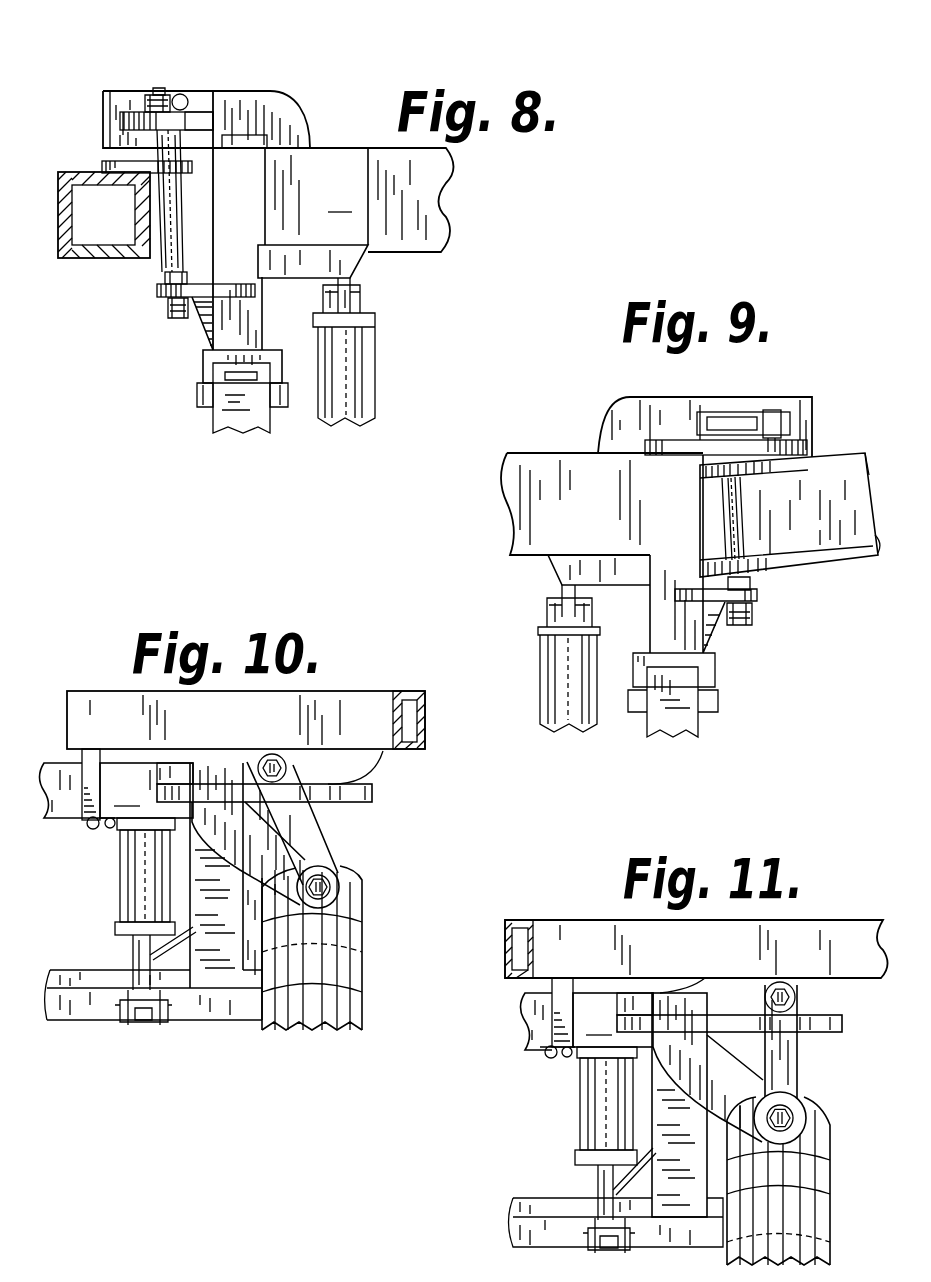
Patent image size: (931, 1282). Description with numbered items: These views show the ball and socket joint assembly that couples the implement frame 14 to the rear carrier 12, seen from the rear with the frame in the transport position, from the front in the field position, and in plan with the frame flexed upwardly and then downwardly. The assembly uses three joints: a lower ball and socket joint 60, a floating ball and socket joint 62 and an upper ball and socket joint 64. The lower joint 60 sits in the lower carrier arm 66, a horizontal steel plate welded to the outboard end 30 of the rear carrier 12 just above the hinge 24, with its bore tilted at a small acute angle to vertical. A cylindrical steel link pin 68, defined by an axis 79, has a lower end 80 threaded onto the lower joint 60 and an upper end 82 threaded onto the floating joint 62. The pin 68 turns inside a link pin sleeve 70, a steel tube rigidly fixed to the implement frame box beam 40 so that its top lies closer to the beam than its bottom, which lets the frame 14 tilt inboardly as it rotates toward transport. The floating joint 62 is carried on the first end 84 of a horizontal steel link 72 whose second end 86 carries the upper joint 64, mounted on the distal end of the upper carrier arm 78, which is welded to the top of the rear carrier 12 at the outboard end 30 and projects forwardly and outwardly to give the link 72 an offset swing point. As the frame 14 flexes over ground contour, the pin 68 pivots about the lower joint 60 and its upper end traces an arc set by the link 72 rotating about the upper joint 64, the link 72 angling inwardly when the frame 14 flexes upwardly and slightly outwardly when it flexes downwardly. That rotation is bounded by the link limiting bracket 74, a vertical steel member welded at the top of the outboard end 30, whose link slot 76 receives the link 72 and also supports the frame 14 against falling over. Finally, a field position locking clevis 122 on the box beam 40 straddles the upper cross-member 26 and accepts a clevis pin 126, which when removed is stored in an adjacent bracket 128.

In FIG. 8, the rear carrier 12 is at (333, 213).
In FIG. 9, the rear carrier 12 is at (602, 592).
In FIG. 10, the implement frame 14 is at (360, 691).
In FIG. 11, the implement frame 14 is at (565, 920).
In FIG. 8, the hinge 24 is at (205, 375).
In FIG. 10, the upper cross-member 26 is at (146, 790).
In FIG. 11, the upper cross-member 26 is at (613, 1020).
In FIG. 8, the outboard end 30 is at (205, 338).
In FIG. 9, the outboard end 30 is at (705, 567).
In FIG. 10, the outboard end 30 is at (153, 891).
In FIG. 11, the outboard end 30 is at (616, 1120).
In FIG. 8, the implement frame box beam 40 is at (140, 222).
In FIG. 10, the implement frame box beam 40 is at (427, 722).
In FIG. 11, the implement frame box beam 40 is at (505, 966).
In FIG. 8, the lower ball and socket joint 60 is at (166, 300).
In FIG. 9, the lower ball and socket joint 60 is at (757, 600).
In FIG. 8, the floating ball and socket joint 62 is at (181, 98).
In FIG. 10, the floating ball and socket joint 62 is at (264, 762).
In FIG. 11, the floating ball and socket joint 62 is at (783, 984).
In FIG. 9, the upper ball and socket joint 64 is at (771, 412).
In FIG. 10, the upper ball and socket joint 64 is at (343, 880).
In FIG. 11, the upper ball and socket joint 64 is at (806, 1118).
In FIG. 8, the lower carrier arm 66 is at (156, 290).
In FIG. 8, the link pin 68 is at (150, 94).
In FIG. 8, the link pin sleeve 70 is at (183, 218).
In FIG. 9, the link pin sleeve 70 is at (790, 515).
In FIG. 8, the link 72 is at (205, 110).
In FIG. 10, the link 72 is at (318, 840).
In FIG. 11, the link 72 is at (797, 1063).
In FIG. 8, the link limiting bracket 74 is at (285, 100).
In FIG. 8, the link slot 76 is at (214, 125).
In FIG. 9, the upper carrier arm 78 is at (808, 450).
In FIG. 10, the upper carrier arm 78 is at (345, 898).
In FIG. 11, the upper carrier arm 78 is at (813, 1150).
In FIG. 8, the axis 79 is at (156, 88).
In FIG. 8, the lower end 80 is at (182, 310).
In FIG. 8, the upper end 82 is at (166, 96).
In FIG. 10, the first end 84 is at (272, 755).
In FIG. 11, the first end 84 is at (800, 995).
In FIG. 10, the second end 86 is at (333, 870).
In FIG. 11, the second end 86 is at (803, 1100).
In FIG. 10, the field position locking clevis 122 is at (82, 820).
In FIG. 11, the field position locking clevis 122 is at (540, 1050).
In FIG. 10, the clevis pin 126 is at (88, 838).
In FIG. 11, the clevis pin 126 is at (560, 1058).
In FIG. 10, the bracket 128 is at (113, 718).
In FIG. 11, the bracket 128 is at (568, 978).